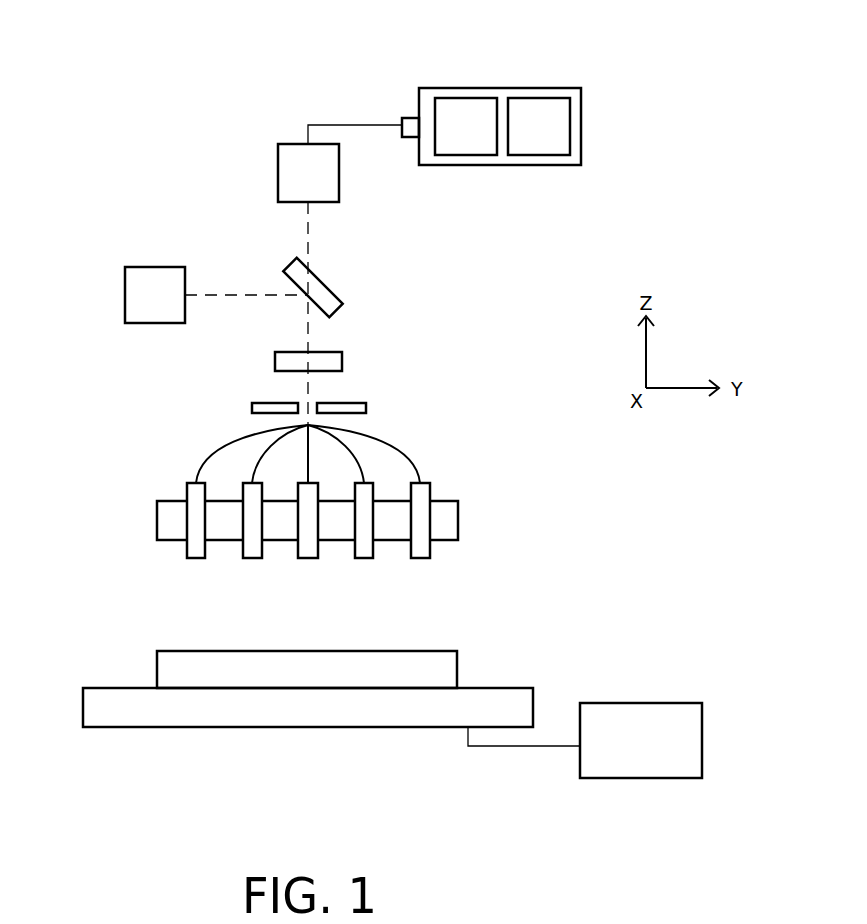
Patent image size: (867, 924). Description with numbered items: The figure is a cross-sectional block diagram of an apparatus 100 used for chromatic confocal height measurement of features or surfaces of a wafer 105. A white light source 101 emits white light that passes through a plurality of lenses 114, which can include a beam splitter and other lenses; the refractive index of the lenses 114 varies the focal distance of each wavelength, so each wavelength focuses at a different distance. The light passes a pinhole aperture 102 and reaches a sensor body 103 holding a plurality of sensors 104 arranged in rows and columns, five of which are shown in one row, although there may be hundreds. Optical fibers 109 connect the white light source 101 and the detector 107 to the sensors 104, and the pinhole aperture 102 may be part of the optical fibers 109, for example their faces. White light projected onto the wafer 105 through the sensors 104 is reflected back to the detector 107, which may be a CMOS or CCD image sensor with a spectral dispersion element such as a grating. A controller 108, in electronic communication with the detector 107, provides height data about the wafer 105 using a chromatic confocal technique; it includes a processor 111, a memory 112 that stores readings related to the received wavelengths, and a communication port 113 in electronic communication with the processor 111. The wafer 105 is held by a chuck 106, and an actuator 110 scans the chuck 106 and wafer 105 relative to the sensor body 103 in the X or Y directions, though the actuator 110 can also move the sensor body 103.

The apparatus 100 is at (120, 153).
The white light source 101 is at (155, 295).
The pinhole aperture 102 is at (378, 400).
The sensor body 103 is at (458, 520).
The sensors 104 is at (430, 555).
The wafer 105 is at (307, 669).
The chuck 106 is at (308, 707).
The detector 107 is at (340, 163).
The controller 108 is at (581, 126).
The optical fibers 109 is at (392, 452).
The actuator 110 is at (585, 740).
The processor 111 is at (466, 126).
The memory 112 is at (539, 126).
The communication port 113 is at (409, 117).
The lenses 114 is at (378, 320).